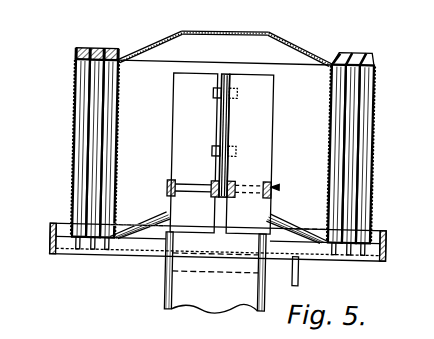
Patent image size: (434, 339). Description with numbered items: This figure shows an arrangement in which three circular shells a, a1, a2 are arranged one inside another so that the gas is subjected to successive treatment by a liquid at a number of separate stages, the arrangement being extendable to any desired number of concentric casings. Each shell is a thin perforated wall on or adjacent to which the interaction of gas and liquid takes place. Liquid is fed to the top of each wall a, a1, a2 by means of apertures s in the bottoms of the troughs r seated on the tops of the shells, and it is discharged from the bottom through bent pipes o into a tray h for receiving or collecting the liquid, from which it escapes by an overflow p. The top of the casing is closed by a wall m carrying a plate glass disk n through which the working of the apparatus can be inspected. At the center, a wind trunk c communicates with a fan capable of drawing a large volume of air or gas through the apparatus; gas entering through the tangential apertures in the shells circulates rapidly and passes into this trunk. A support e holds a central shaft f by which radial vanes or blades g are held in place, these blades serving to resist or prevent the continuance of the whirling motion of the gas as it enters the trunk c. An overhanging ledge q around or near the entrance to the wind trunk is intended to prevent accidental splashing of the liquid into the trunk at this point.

The troughs r is at (104, 50).
The wall m is at (160, 46).
The plate glass disk n is at (232, 36).
The apertures s is at (82, 66).
The cylindrical shell a is at (373, 134).
The circular shell a1 is at (355, 163).
The circular shell a2 is at (339, 131).
The support e is at (193, 188).
The radial vanes or blades g is at (270, 151).
The central shaft f is at (228, 134).
The overhanging ledge q is at (166, 184).
The tray h is at (52, 238).
The bent pipes o is at (109, 253).
The wind trunk c is at (175, 293).
The overflow p is at (301, 274).